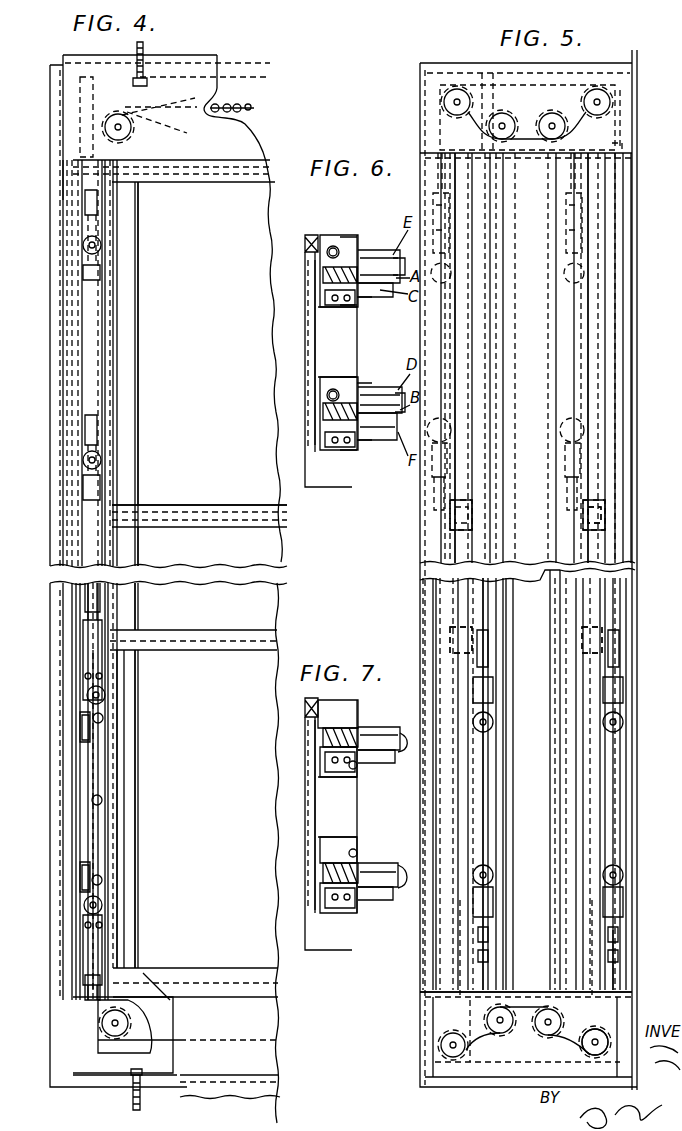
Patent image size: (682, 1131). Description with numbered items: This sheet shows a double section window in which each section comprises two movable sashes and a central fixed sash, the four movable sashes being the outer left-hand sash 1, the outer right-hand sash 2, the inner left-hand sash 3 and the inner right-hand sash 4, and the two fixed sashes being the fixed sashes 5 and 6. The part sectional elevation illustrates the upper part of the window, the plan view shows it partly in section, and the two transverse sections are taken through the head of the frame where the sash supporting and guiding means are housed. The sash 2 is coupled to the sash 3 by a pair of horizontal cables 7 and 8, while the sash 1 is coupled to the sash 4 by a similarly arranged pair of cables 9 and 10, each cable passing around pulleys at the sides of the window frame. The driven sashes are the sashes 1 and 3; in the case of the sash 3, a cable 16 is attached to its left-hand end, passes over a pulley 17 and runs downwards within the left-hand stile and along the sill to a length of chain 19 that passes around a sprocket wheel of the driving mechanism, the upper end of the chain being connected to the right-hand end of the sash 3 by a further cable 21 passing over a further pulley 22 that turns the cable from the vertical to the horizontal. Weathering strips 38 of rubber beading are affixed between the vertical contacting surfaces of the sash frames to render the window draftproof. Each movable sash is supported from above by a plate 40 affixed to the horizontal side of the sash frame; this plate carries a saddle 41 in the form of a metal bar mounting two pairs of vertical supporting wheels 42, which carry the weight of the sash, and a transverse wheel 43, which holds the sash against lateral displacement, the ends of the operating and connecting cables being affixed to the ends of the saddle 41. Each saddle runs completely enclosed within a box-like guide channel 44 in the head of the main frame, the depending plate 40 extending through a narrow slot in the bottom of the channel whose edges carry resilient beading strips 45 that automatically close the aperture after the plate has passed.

In FIG. 6, the outer left-hand sash 1 is at (385, 294).
In FIG. 7, the outer left-hand sash 1 is at (385, 757).
In FIG. 5, the outer left-hand sash 1 is at (472, 843).
In FIG. 6, the outer right-hand sash 2 is at (376, 256).
In FIG. 5, the outer right-hand sash 2 is at (450, 345).
In FIG. 4, the inner left-hand sash 3 is at (168, 809).
In FIG. 6, the inner left-hand sash 3 is at (384, 441).
In FIG. 7, the inner left-hand sash 3 is at (380, 894).
In FIG. 5, the inner left-hand sash 3 is at (607, 958).
In FIG. 4, the inner right-hand sash 4 is at (172, 343).
In FIG. 6, the inner right-hand sash 4 is at (382, 390).
In FIG. 5, the inner right-hand sash 4 is at (582, 340).
In FIG. 6, the fixed sash 5 is at (398, 268).
In FIG. 7, the fixed sash 5 is at (385, 740).
In FIG. 5, the fixed sash 5 is at (450, 518).
In FIG. 4, the fixed sash 6 is at (183, 606).
In FIG. 6, the fixed sash 6 is at (400, 418).
In FIG. 7, the fixed sash 6 is at (388, 872).
In FIG. 5, the fixed sash 6 is at (583, 520).
In FIG. 4, the horizontal cable 7 is at (88, 622).
In FIG. 4, the horizontal cable 8 is at (85, 986).
In FIG. 4, the horizontal cable 9 is at (78, 182).
In FIG. 4, the horizontal cable 10 is at (82, 548).
In FIG. 4, the cable 16 is at (163, 1042).
In FIG. 5, the cable 16 is at (618, 985).
In FIG. 4, the pulley 17 is at (135, 1026).
In FIG. 5, the pulley 17 is at (630, 1013).
In FIG. 4, the chain 19 is at (253, 112).
In FIG. 4, the cable 21 is at (187, 133).
In FIG. 5, the cable 21 is at (618, 364).
In FIG. 4, the pulley 22 is at (130, 137).
In FIG. 5, the pulley 22 is at (623, 127).
In FIG. 7, the weathering strips 38 is at (398, 880).
In FIG. 5, the weathering strips 38 is at (600, 637).
In FIG. 4, the plate 40 is at (120, 826).
In FIG. 6, the plate 40 is at (362, 443).
In FIG. 4, the saddle 41 is at (82, 828).
In FIG. 6, the saddle 41 is at (398, 331).
In FIG. 7, the saddle 41 is at (340, 912).
In FIG. 5, the saddle 41 is at (618, 800).
In FIG. 4, the vertical supporting wheels 42 is at (85, 903).
In FIG. 6, the vertical supporting wheels 42 is at (350, 452).
In FIG. 7, the vertical supporting wheels 42 is at (345, 778).
In FIG. 5, the vertical supporting wheels 42 is at (627, 690).
In FIG. 4, the transverse wheel 43 is at (80, 870).
In FIG. 6, the transverse wheel 43 is at (331, 455).
In FIG. 5, the transverse wheel 43 is at (625, 725).
In FIG. 7, the guide channel 44 is at (320, 890).
In FIG. 7, the resilient beading strips 45 is at (356, 853).